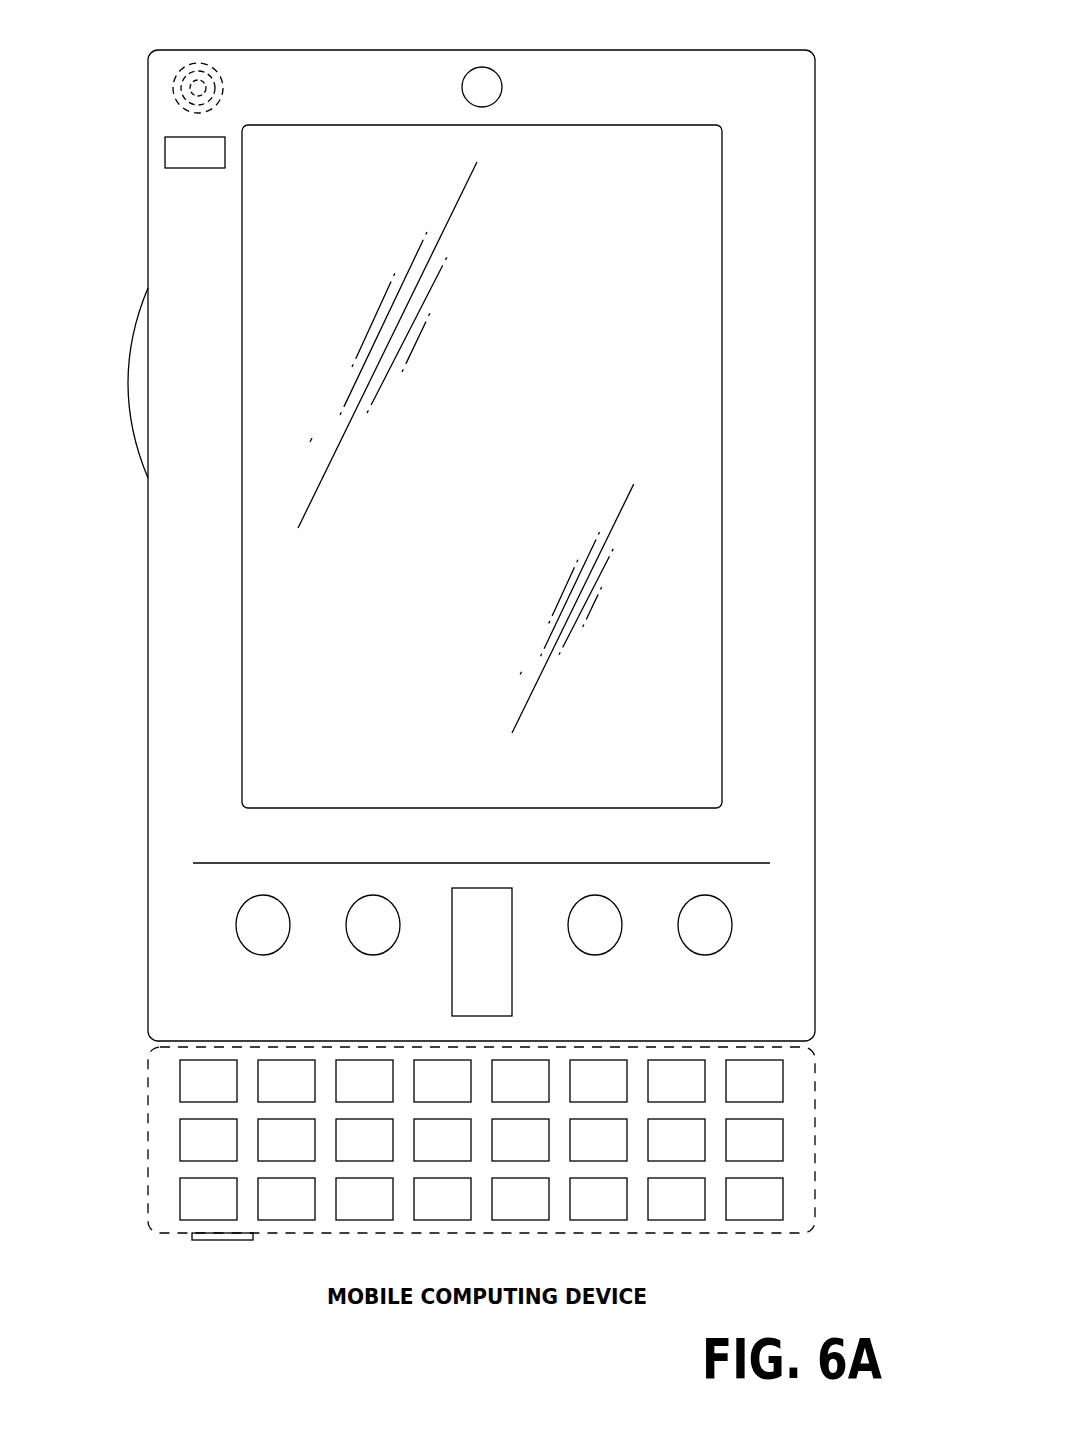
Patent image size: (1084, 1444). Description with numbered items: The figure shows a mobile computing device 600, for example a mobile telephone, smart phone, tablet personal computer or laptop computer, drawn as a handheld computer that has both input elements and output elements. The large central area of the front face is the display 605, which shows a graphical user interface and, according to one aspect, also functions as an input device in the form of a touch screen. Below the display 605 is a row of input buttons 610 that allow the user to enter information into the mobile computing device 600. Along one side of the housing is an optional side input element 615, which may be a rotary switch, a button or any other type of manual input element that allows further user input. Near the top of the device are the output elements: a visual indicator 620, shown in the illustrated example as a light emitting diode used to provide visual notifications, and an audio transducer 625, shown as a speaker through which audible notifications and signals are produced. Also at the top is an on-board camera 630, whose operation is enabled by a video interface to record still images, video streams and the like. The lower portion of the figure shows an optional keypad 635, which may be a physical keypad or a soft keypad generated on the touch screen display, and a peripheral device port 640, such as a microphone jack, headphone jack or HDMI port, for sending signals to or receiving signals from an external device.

The mobile computing device 600 is at (778, 50).
The display 605 is at (266, 642).
The input buttons 610 is at (263, 956).
The side input element 615 is at (128, 385).
The visual indicator 620 is at (165, 152).
The audio transducer 625 is at (167, 89).
The on-board camera 630 is at (482, 67).
The keypad 635 is at (160, 1139).
The peripheral device port 640 is at (198, 1242).